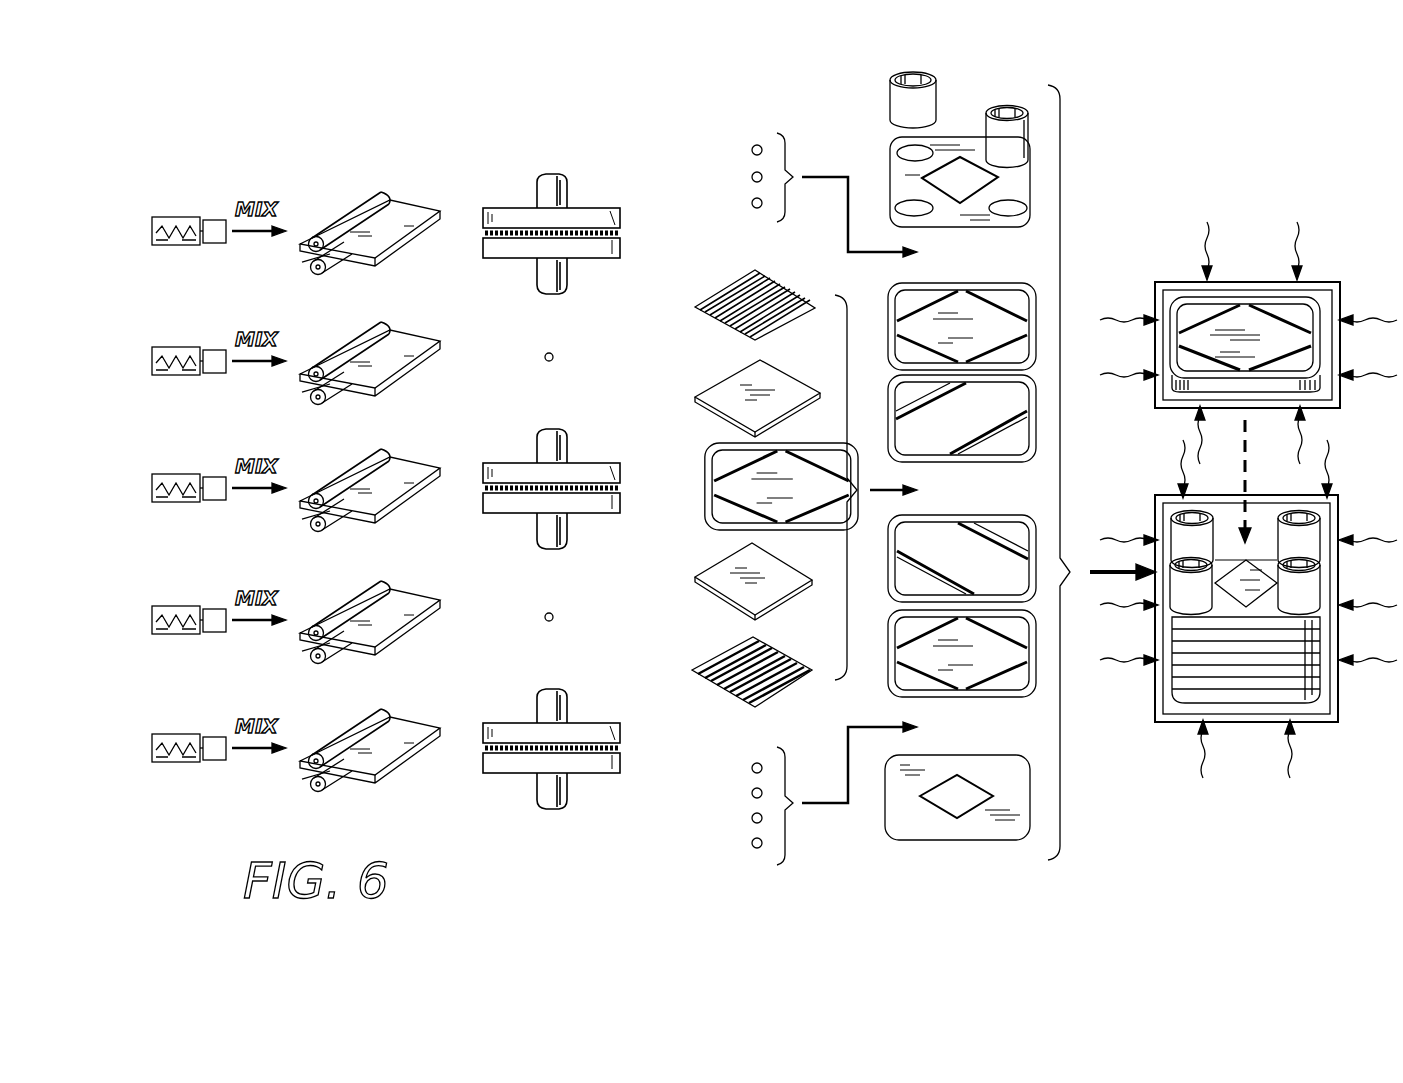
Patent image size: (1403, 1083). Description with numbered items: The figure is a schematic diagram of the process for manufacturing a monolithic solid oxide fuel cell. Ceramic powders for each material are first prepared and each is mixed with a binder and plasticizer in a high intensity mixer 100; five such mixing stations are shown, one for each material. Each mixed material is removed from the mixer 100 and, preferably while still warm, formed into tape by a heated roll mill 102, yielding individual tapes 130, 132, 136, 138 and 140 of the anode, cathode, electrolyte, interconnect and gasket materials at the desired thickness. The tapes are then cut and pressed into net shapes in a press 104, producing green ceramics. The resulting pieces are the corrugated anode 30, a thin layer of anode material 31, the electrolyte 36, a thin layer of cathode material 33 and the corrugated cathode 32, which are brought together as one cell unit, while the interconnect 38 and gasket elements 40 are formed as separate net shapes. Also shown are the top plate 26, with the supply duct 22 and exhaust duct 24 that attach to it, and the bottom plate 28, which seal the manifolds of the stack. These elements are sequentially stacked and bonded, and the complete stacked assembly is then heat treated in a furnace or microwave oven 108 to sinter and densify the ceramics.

The supply duct 22 is at (890, 98).
The exhaust duct 24 is at (988, 126).
The top plate 26 is at (890, 165).
The bottom plate 28 is at (970, 760).
The anode 30 is at (746, 298).
The thin layer of anode material 31 is at (737, 393).
The cathode 32 is at (722, 680).
The thin layer of cathode material 33 is at (738, 584).
The electrolyte 36 is at (692, 500).
The interconnect 38 is at (940, 282).
The gasket element 40 is at (1013, 462).
The high intensity mixer 100 is at (191, 466).
The roll mill 102 is at (346, 482).
The press 104 is at (601, 461).
The furnace or microwave oven 108 is at (1246, 282).
The tape 130 is at (381, 218).
The tape 132 is at (381, 348).
The tape 136 is at (381, 475).
The tape 138 is at (381, 607).
The tape 140 is at (381, 735).